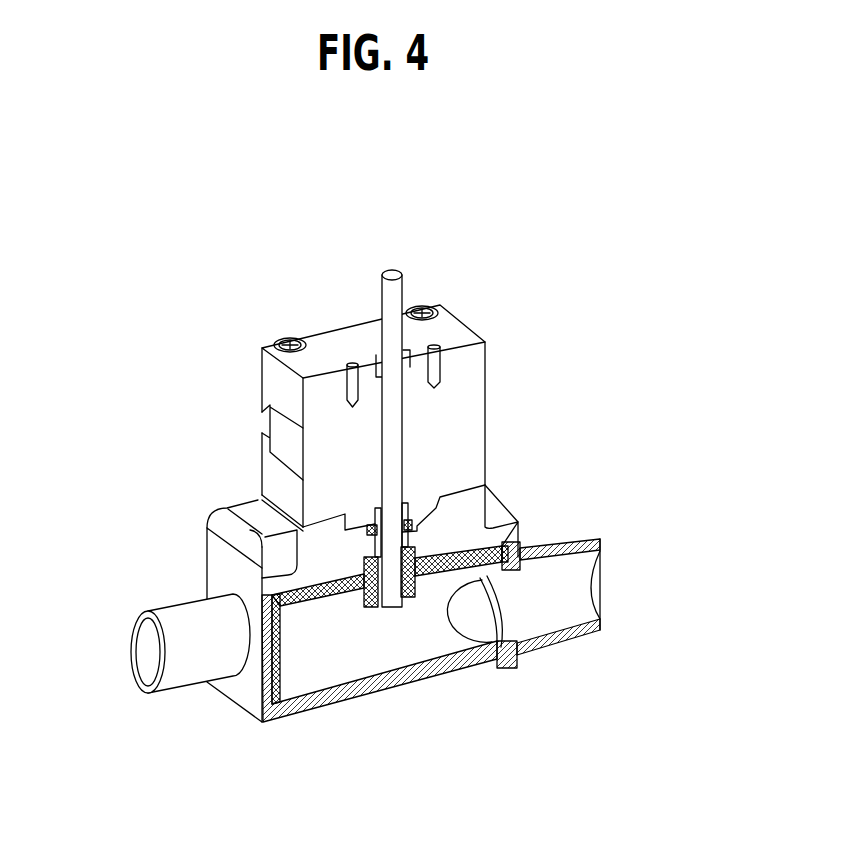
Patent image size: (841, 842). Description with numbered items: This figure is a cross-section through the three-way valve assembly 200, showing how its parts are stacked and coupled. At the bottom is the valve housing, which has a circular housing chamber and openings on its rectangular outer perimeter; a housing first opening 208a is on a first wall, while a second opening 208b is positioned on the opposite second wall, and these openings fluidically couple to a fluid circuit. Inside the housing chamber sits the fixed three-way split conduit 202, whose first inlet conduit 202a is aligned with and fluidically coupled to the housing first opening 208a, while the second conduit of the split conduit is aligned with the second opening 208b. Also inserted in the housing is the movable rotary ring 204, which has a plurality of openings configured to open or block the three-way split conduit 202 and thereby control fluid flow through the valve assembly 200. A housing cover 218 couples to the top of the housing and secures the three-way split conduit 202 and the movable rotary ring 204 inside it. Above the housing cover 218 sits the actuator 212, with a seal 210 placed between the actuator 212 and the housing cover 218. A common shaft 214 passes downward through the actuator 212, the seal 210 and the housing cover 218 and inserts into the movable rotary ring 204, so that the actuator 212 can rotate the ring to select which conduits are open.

The three-way valve assembly 200 is at (149, 259).
The three-way split conduit 202 is at (373, 632).
The first inlet conduit 202a is at (467, 627).
The movable rotary ring 204 is at (519, 523).
The housing first opening 208a is at (588, 593).
The second opening 208b is at (163, 648).
The seal 210 is at (442, 505).
The actuator 212 is at (458, 407).
The common shaft 214 is at (392, 317).
The housing cover 218 is at (213, 523).